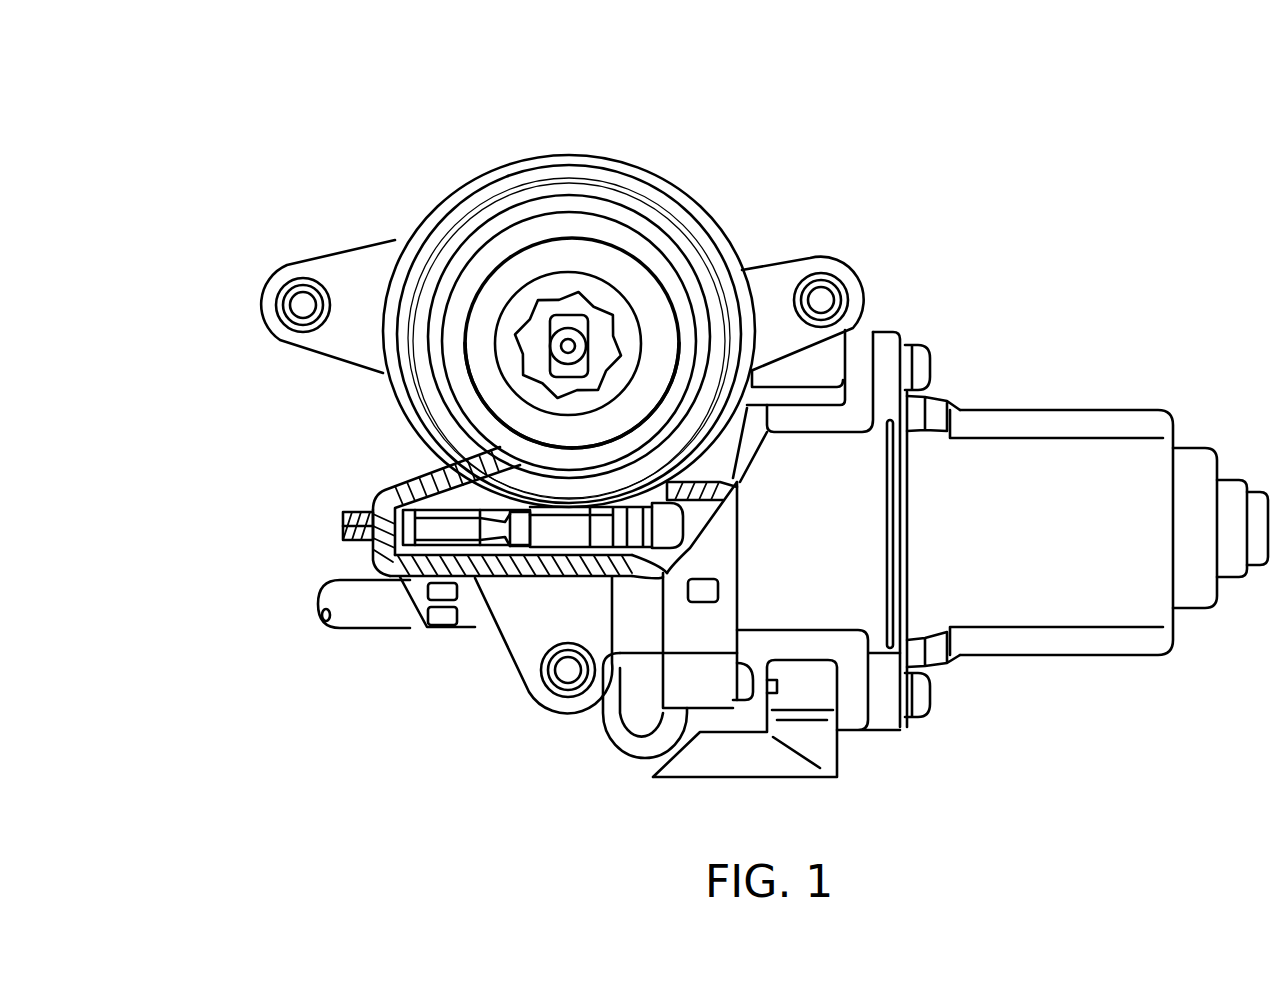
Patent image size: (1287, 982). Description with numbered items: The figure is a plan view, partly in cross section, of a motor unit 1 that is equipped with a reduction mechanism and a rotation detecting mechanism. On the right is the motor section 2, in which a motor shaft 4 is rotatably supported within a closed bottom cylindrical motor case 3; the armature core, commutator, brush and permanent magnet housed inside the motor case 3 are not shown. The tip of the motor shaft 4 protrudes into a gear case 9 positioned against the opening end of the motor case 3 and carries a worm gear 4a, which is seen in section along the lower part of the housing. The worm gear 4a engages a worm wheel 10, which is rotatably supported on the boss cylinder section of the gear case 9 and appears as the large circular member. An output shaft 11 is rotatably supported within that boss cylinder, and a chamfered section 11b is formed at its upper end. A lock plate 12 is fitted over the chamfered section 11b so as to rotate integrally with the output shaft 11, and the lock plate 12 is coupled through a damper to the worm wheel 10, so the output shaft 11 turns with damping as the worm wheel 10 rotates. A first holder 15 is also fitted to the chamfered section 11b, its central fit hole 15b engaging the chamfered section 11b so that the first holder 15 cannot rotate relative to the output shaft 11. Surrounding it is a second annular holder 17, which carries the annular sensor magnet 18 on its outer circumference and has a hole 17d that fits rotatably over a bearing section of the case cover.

The motor unit 1 is at (1043, 252).
The motor section 2 is at (1063, 678).
The motor case 3 is at (1100, 462).
The motor shaft 4 is at (677, 528).
The worm gear 4a is at (502, 632).
The gear case 9 is at (625, 168).
The worm wheel 10 is at (555, 178).
The output shaft 11 is at (549, 318).
The chamfered section 11b is at (543, 360).
The lock plate 12 is at (452, 358).
The first holder 15 is at (467, 332).
The fit hole 15b is at (533, 340).
The second annular holder 17 is at (617, 313).
The hole 17d is at (605, 372).
The sensor magnet 18 is at (588, 268).